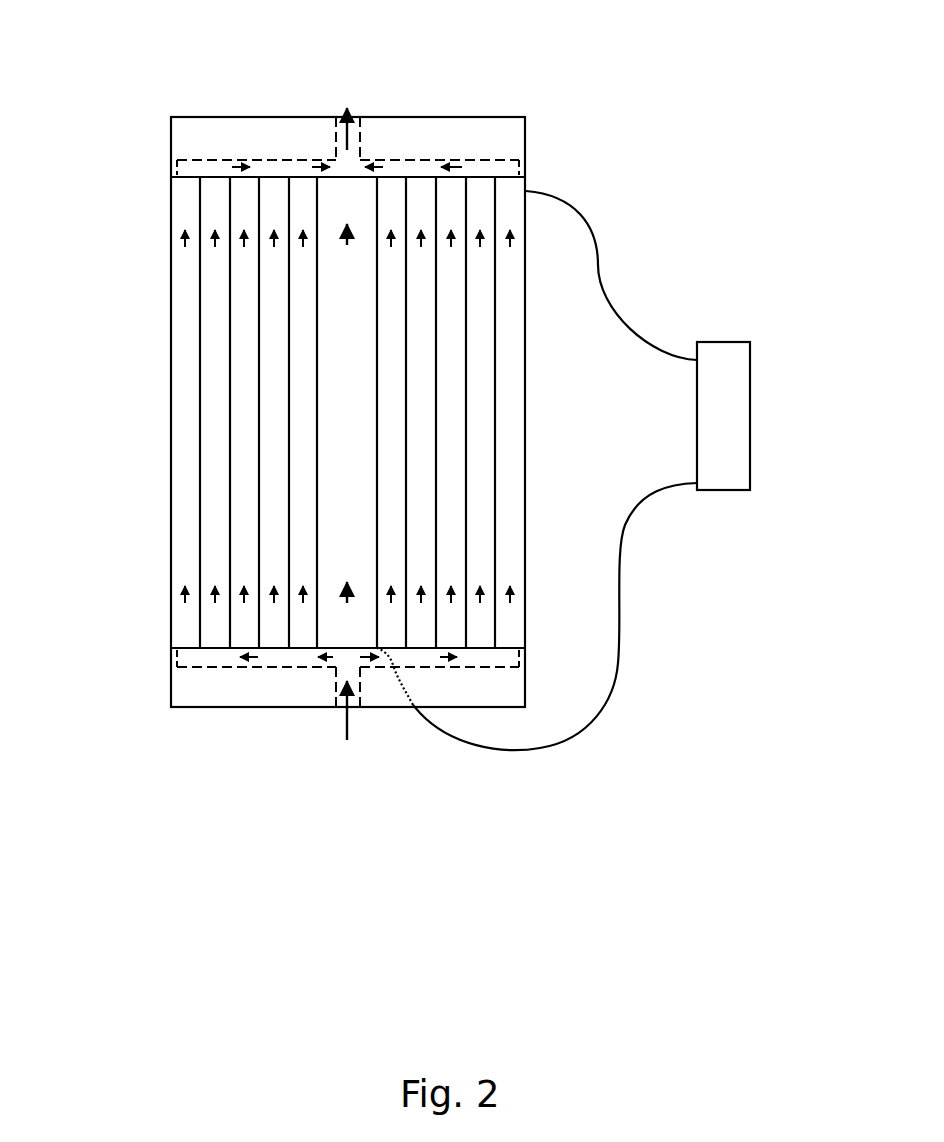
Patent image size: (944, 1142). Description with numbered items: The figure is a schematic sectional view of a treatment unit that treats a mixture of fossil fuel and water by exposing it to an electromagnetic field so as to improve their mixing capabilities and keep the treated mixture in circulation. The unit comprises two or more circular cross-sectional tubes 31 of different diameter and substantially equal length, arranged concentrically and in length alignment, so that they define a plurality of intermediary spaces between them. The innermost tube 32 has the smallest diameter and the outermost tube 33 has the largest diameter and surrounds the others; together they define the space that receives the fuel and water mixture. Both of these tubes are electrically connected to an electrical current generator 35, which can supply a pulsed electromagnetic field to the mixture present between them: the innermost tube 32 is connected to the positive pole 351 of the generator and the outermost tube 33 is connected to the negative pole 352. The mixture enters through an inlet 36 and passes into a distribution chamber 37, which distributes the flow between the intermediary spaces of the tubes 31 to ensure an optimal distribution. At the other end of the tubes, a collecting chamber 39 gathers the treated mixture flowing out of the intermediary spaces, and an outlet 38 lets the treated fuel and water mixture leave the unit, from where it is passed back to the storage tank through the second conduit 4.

The second conduit 4 is at (458, 142).
The circular cross-sectional tubes 31 is at (500, 310).
The innermost tube 32 is at (317, 482).
The outermost tube 33 is at (173, 447).
The electrical current generator 35 is at (723, 475).
The positive pole 351 is at (590, 725).
The negative pole 352 is at (623, 310).
The inlet 36 is at (347, 697).
The distribution chamber 37 is at (297, 657).
The outlet 38 is at (335, 128).
The collecting chamber 39 is at (400, 170).